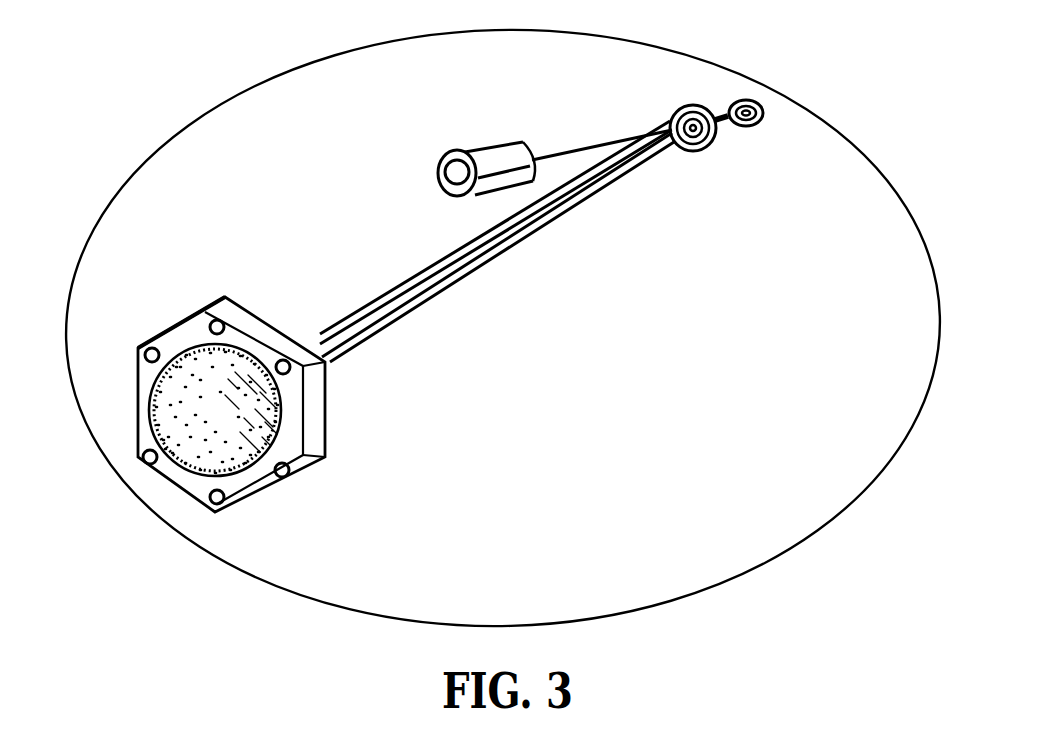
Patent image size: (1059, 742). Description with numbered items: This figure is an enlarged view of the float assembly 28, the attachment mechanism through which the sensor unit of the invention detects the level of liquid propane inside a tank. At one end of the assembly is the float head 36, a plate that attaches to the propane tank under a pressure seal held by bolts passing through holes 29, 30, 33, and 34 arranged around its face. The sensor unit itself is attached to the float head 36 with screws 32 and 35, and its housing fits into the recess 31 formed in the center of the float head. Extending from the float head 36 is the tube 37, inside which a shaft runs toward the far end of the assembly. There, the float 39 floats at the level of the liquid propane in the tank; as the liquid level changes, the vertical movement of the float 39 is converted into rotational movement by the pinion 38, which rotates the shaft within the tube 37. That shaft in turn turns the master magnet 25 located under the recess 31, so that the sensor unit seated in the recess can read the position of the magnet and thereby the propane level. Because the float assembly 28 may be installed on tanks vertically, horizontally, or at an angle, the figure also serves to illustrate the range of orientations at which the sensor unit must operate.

The master magnet 25 is at (319, 337).
The float assembly 28 is at (238, 93).
The bolt hole 29 is at (143, 347).
The bolt hole 30 is at (145, 467).
The recess 31 is at (223, 427).
The screw 32 is at (222, 513).
The bolt hole 33 is at (290, 478).
The bolt hole 34 is at (323, 375).
The screw 35 is at (208, 323).
The float head 36 is at (268, 299).
The tube 37 is at (412, 318).
The pinion 38 is at (722, 130).
The float 39 is at (453, 148).